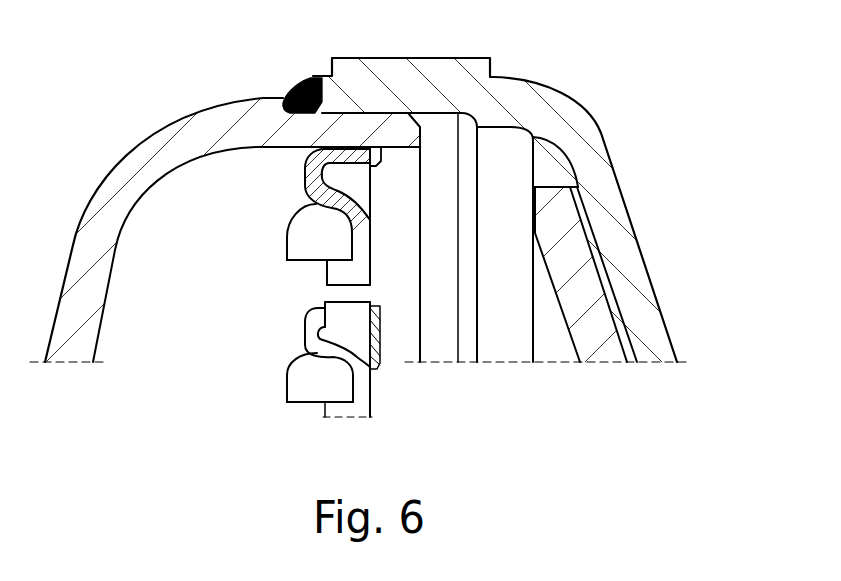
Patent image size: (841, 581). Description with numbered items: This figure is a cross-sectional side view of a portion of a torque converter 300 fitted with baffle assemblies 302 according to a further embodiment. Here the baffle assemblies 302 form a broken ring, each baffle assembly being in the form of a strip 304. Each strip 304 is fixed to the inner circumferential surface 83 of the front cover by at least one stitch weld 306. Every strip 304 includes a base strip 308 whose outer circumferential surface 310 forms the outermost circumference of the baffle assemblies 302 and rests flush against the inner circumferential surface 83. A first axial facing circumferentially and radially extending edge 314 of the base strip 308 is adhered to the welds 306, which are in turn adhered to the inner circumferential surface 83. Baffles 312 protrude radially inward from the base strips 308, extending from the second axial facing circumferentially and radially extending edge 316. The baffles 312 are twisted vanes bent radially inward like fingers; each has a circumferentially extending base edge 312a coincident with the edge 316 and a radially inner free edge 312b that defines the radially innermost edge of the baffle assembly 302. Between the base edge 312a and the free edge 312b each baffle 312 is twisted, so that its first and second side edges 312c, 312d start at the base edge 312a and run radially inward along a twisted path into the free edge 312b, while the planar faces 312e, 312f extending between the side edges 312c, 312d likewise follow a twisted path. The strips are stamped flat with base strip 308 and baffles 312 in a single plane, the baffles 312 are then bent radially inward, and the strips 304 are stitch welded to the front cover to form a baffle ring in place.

The torque converter 300 is at (592, 75).
The outer circumferential surface 310 is at (345, 147).
The inner circumferential surface 83 is at (324, 150).
The baffle assembly 302 is at (280, 210).
The strip 304 is at (262, 422).
The stitch weld 306 is at (383, 155).
The base strip 308 is at (371, 216).
The baffle 312 is at (288, 242).
The base edge 312a is at (323, 173).
The free edge 312b is at (288, 261).
The first side edge 312c is at (366, 229).
The second side edge 312d is at (290, 226).
The planar face 312e is at (347, 247).
The planar face 312f is at (379, 337).
The first axial facing circumferentially and radially extending edge 314 is at (371, 256).
The second axial facing circumferentially and radially extending edge 316 is at (326, 278).